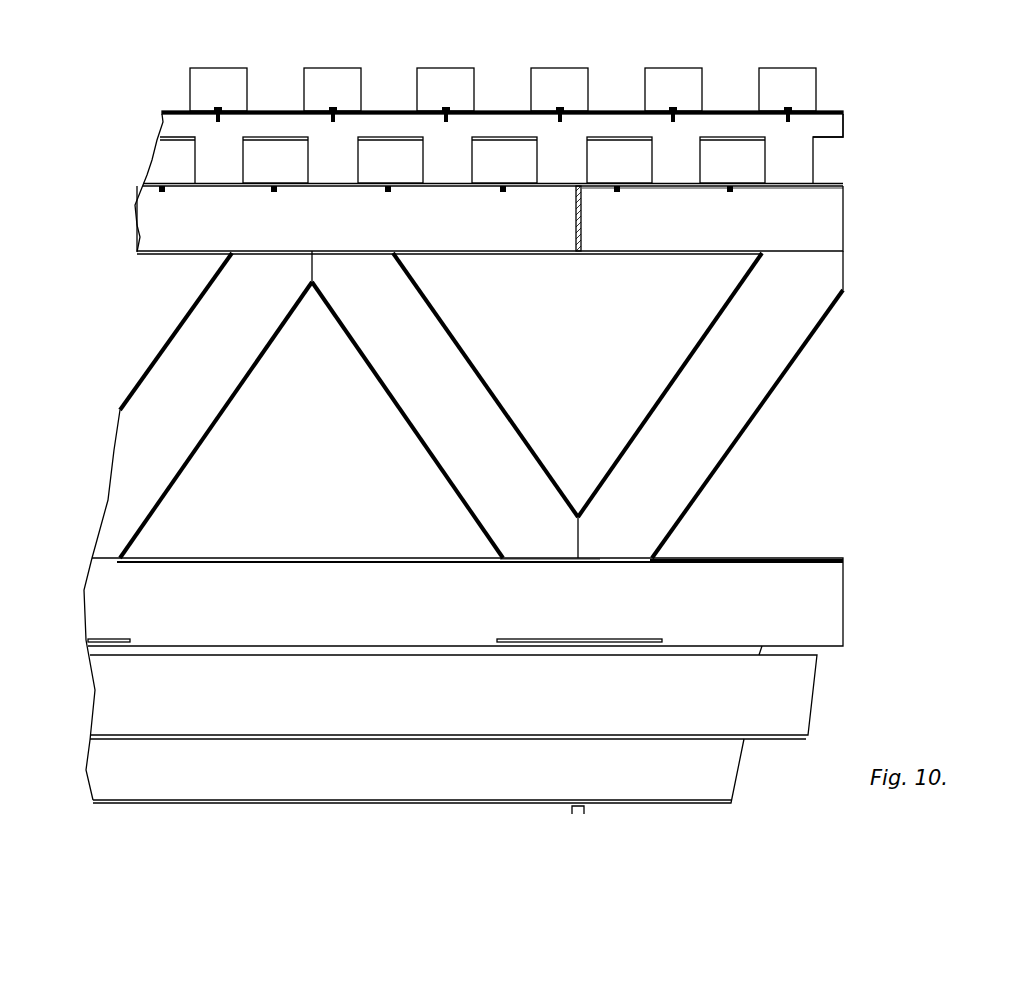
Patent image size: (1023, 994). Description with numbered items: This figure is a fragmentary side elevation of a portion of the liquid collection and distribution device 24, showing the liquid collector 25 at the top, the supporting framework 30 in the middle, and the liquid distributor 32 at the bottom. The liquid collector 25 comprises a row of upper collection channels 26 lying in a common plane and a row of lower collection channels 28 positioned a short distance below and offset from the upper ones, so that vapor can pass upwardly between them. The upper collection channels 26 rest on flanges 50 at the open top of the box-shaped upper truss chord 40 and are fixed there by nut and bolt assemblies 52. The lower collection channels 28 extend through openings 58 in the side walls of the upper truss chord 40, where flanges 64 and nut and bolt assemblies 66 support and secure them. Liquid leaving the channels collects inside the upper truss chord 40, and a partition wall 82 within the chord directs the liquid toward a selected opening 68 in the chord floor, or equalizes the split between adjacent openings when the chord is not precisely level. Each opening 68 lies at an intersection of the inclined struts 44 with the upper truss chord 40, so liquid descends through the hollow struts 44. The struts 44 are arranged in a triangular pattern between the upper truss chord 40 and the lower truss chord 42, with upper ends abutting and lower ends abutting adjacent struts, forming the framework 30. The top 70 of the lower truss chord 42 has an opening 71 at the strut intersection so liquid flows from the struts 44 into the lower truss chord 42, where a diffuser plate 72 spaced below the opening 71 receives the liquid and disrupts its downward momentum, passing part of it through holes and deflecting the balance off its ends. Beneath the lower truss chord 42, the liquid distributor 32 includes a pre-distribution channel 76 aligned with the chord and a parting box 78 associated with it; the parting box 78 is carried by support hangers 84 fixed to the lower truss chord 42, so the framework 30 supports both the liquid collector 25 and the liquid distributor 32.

The liquid collection and distribution device 24 is at (510, 109).
The liquid collector 25 is at (833, 106).
The upper collection channels 26 is at (790, 67).
The lower collection channels 28 is at (733, 160).
The framework 30 is at (773, 406).
The liquid distributor 32 is at (502, 724).
The upper truss chord 40 is at (833, 232).
The lower truss chord 42 is at (840, 554).
The inclined struts 44 is at (462, 355).
The flanges 50 is at (627, 113).
The nut and bolt assemblies 52 is at (565, 118).
The openings 58 is at (836, 138).
The flanges 64 is at (678, 187).
The nut and bolt assemblies 66 is at (731, 189).
The opening 68 is at (373, 290).
The top 70 is at (714, 560).
The opening 71 is at (545, 565).
The diffuser plate 72 is at (112, 638).
The pre-distribution channels 76 is at (800, 673).
The parting box 78 is at (723, 765).
The partition wall 82 is at (576, 210).
The support hangers 84 is at (585, 811).